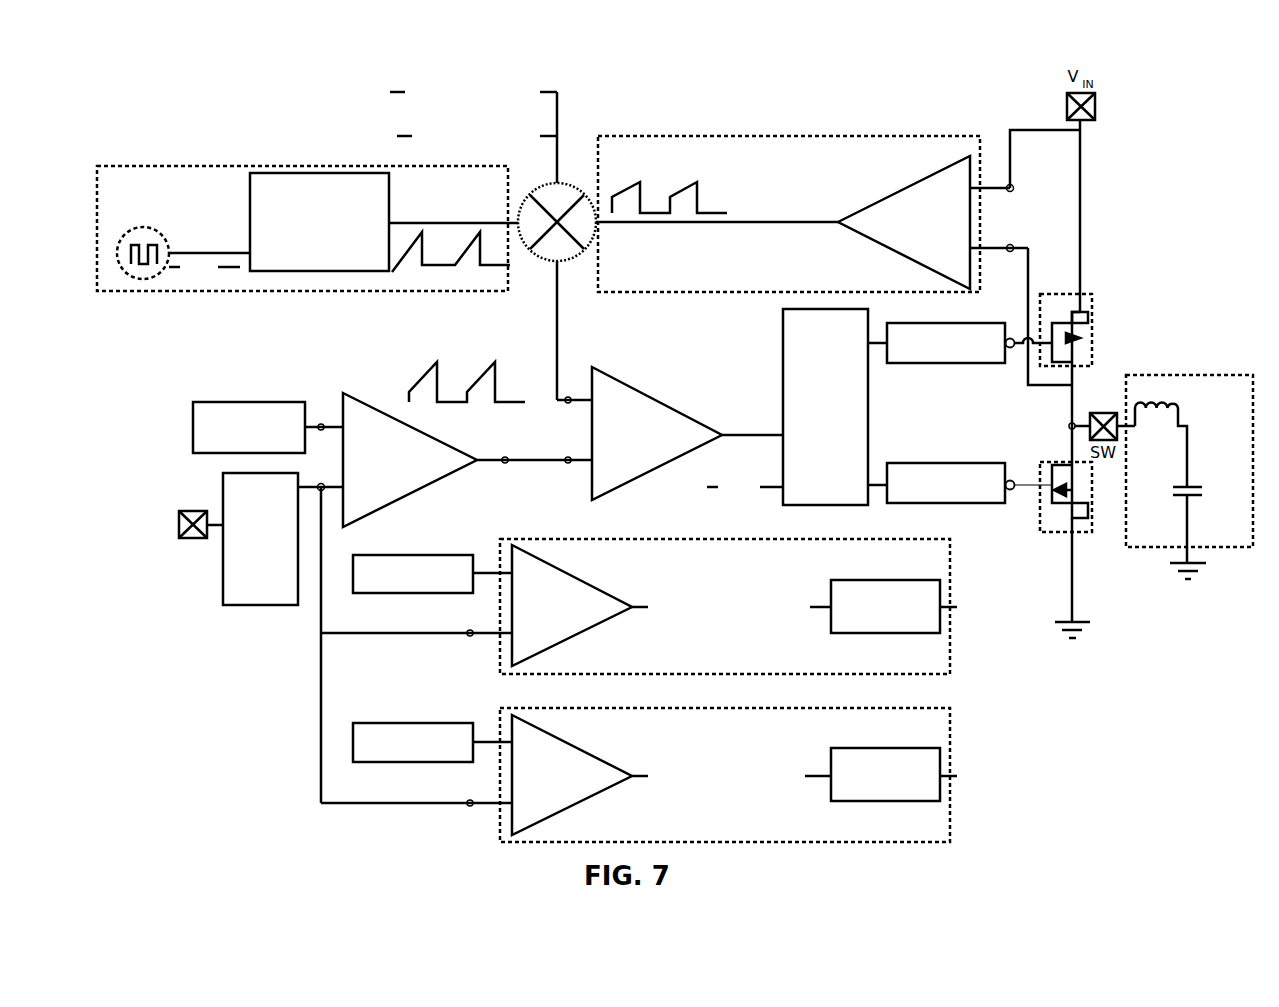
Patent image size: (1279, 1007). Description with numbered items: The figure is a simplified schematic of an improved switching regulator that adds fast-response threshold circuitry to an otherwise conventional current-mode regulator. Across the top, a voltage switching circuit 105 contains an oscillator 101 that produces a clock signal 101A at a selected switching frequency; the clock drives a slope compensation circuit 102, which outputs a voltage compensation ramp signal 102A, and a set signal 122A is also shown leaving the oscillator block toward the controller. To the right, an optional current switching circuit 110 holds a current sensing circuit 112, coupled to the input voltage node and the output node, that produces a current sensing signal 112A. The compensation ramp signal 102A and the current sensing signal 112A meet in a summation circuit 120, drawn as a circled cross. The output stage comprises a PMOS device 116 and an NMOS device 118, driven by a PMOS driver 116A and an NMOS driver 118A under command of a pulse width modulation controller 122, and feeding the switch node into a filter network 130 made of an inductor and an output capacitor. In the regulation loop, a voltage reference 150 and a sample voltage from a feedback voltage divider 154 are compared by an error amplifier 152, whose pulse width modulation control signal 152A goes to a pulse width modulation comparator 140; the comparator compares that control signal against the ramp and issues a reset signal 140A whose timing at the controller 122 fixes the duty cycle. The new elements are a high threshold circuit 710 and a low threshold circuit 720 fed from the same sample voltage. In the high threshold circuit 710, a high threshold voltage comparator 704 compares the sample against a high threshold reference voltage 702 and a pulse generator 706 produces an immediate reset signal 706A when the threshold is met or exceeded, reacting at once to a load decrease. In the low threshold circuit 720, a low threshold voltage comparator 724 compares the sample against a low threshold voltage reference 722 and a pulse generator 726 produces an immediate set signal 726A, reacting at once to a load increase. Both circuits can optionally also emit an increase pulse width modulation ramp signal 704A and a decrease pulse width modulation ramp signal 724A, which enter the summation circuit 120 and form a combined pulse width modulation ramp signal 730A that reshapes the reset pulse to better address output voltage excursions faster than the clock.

The voltage switching circuit 105 is at (232, 166).
The oscillator 101 is at (153, 277).
The clock signal 101A is at (133, 262).
The slope compensation circuit 102 is at (313, 173).
The voltage compensation ramp signal 102A is at (459, 222).
The set signal 122A is at (476, 385).
The summation circuit 120 is at (562, 182).
The combined pulse width modulation ramp signal 730A is at (497, 212).
The increase pulse width modulation ramp signal 704A is at (610, 348).
The decrease pulse width modulation ramp signal 724A is at (614, 456).
The current switching circuit 110 is at (655, 136).
The current sensing circuit 112 is at (900, 187).
The current sensing signal 112A is at (680, 175).
The PMOS device 116 is at (1093, 318).
The PMOS driver 116A is at (953, 363).
The NMOS device 118 is at (1082, 533).
The NMOS driver 118A is at (985, 503).
The filter network 130 is at (1178, 375).
The voltage reference 150 is at (232, 402).
The error amplifier 152 is at (352, 395).
The pulse width modulation control signal 152A is at (530, 492).
The feedback voltage divider 154 is at (258, 605).
The pulse width modulation comparator 140 is at (637, 473).
The reset signal 140A is at (750, 433).
The pulse width modulation controller 122 is at (842, 505).
The high threshold reference voltage 702 is at (432, 574).
The high threshold voltage comparator 704 is at (580, 632).
The pulse generator 706 is at (882, 633).
The immediate reset signal 706A is at (994, 614).
The high threshold circuit 710 is at (768, 675).
The low threshold voltage reference 722 is at (432, 743).
The low threshold voltage comparator 724 is at (580, 801).
The pulse generator 726 is at (882, 801).
The immediate set signal 726A is at (994, 776).
The low threshold circuit 720 is at (715, 842).